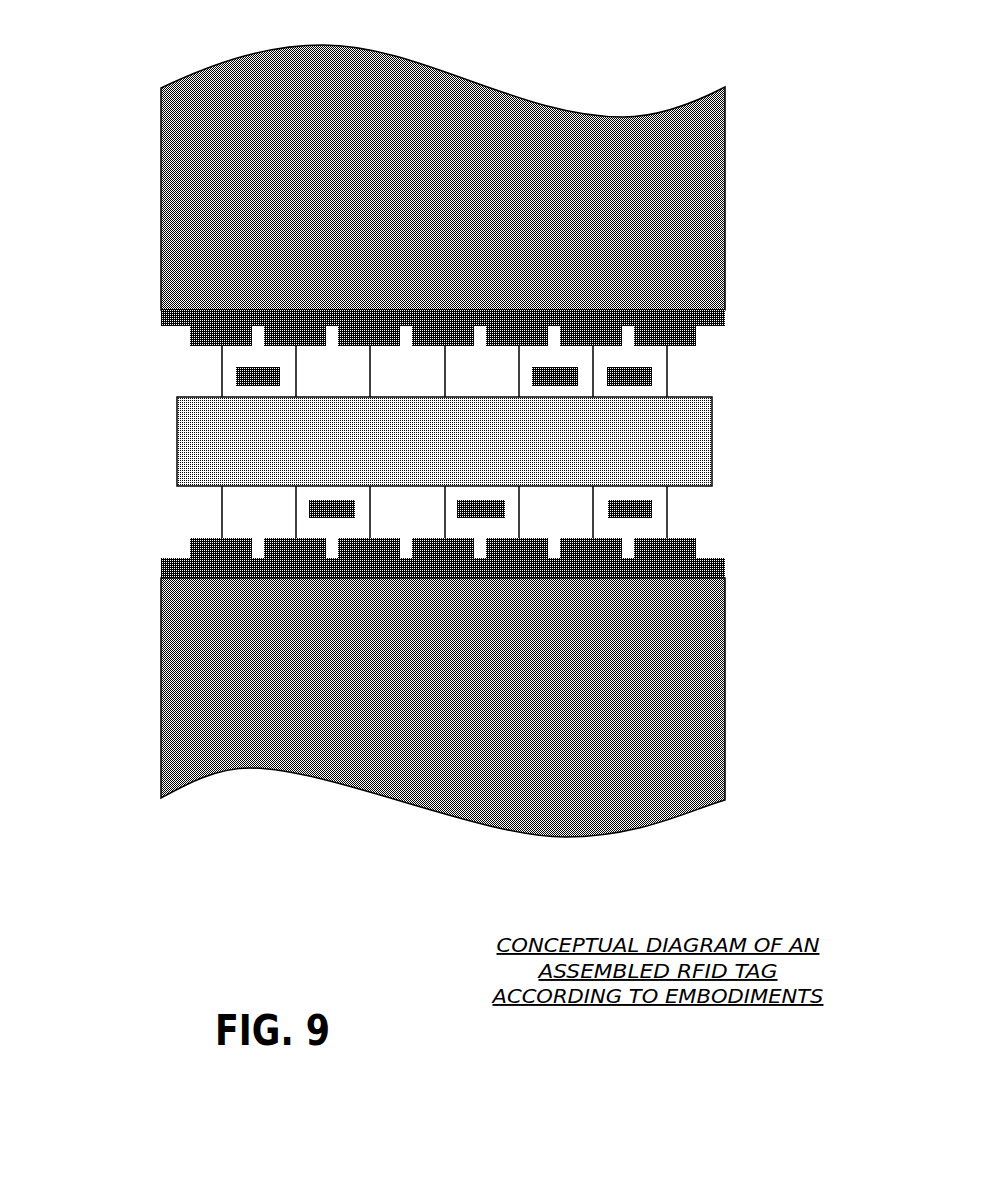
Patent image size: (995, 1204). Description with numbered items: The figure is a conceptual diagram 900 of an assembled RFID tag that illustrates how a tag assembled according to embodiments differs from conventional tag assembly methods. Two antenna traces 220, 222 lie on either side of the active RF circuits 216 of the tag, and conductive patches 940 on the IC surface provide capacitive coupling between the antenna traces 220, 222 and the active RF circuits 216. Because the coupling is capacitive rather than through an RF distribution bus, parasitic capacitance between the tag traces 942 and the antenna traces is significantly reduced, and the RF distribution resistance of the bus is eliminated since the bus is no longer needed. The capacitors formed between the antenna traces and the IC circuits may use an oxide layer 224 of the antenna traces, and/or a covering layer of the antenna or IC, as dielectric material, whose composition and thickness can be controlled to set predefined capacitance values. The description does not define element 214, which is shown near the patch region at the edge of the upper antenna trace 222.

The diagram 900 is at (414, 289).
The antenna contact pad 214 is at (188, 327).
The active RF circuits 216 is at (194, 456).
The antenna trace 220 is at (221, 700).
The antenna trace 222 is at (696, 189).
The oxide layer 224 is at (722, 310).
The conductive patches 940 is at (700, 339).
The tag traces 942 is at (652, 508).